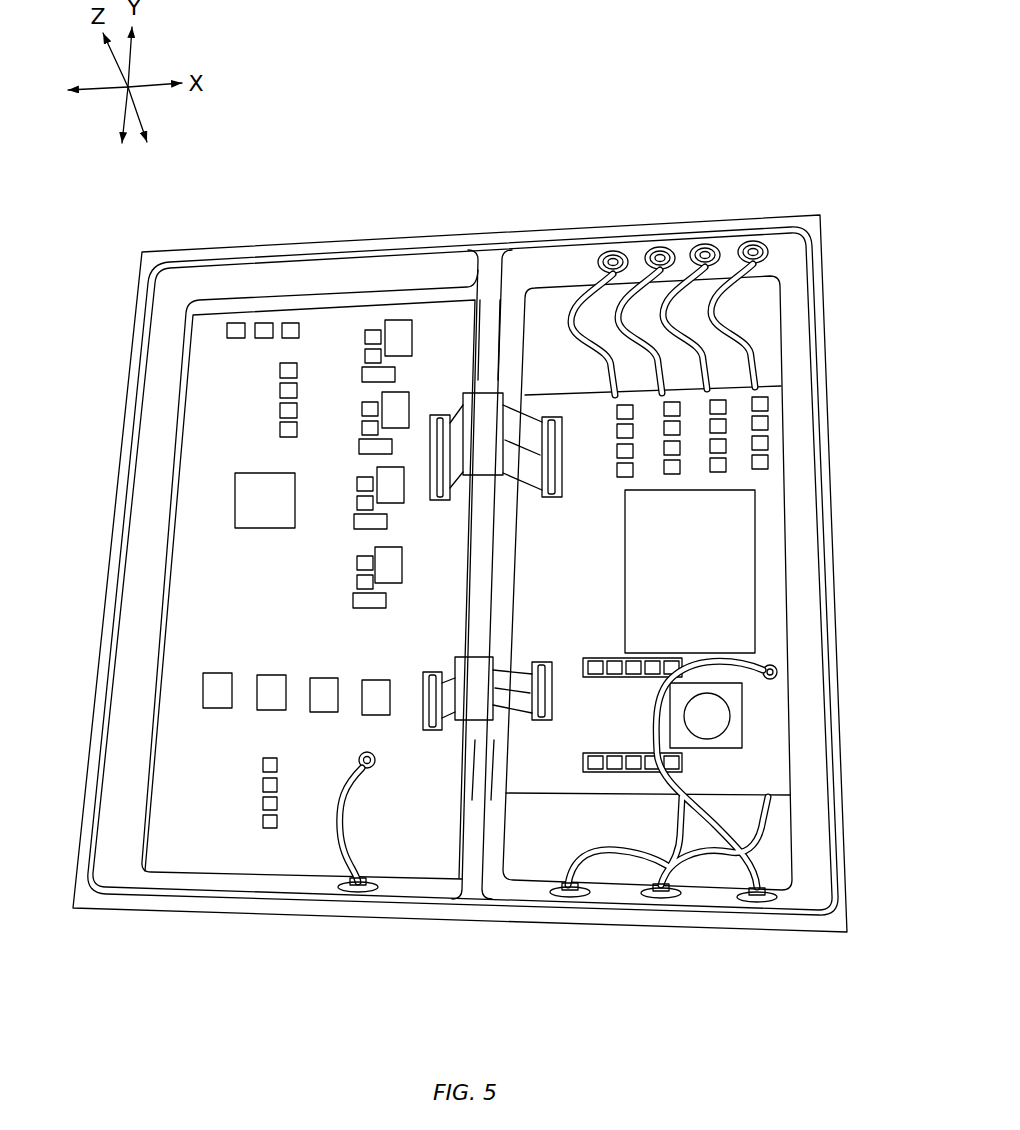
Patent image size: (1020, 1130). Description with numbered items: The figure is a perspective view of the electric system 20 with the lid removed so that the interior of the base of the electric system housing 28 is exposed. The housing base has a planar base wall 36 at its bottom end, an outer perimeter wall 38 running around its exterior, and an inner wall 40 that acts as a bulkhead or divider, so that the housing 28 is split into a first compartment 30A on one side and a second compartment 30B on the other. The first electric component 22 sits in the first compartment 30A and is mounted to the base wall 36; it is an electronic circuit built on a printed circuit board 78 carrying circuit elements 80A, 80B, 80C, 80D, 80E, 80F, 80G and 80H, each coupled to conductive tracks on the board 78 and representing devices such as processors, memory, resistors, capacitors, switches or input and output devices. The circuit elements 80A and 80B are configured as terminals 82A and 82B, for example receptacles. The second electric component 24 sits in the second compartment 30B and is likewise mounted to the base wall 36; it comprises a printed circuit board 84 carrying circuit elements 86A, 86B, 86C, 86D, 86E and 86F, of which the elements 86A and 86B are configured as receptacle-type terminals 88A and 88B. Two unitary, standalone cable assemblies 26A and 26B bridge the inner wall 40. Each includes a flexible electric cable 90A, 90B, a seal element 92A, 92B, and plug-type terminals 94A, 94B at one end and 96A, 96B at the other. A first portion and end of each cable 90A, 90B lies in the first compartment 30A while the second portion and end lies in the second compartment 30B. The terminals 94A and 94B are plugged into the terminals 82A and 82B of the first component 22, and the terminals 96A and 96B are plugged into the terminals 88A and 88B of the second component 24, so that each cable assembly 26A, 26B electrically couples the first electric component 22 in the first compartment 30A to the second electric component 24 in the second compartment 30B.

The electric system 20 is at (806, 72).
The first electric component 22 is at (162, 607).
The second electric component 24 is at (787, 470).
The cable assembly 26A is at (487, 380).
The cable assembly 26B is at (477, 727).
The electric system housing 28 is at (489, 527).
The first compartment 30A is at (239, 536).
The second compartment 30B is at (790, 869).
The base wall 36 is at (283, 307).
The outer perimeter wall 38 is at (772, 210).
The inner wall 40 is at (485, 388).
The printed circuit board 78 is at (239, 536).
The circuit element 80A is at (431, 341).
The circuit element 80B is at (477, 820).
The circuit element 80C is at (250, 472).
The circuit element 80D is at (268, 675).
The circuit element 80E is at (263, 821).
The circuit element 80F is at (365, 556).
The circuit element 80G is at (367, 608).
The circuit element 80H is at (357, 582).
The terminal 82A is at (462, 397).
The terminal 82B is at (455, 722).
The printed circuit board 84 is at (710, 583).
The circuit element 86A is at (642, 476).
The circuit element 86B is at (637, 662).
The circuit element 86C is at (768, 460).
The circuit element 86D is at (756, 580).
The circuit element 86E is at (747, 713).
The circuit element 86F is at (653, 773).
The terminal 88A is at (555, 497).
The terminal 88B is at (556, 662).
The electric cable 90A is at (524, 402).
The electric cable 90B is at (521, 720).
The seal element 92A is at (638, 450).
The seal element 92B is at (573, 653).
The terminal 94A is at (447, 501).
The terminal 94B is at (446, 676).
The terminal 96A is at (639, 439).
The terminal 96B is at (632, 654).